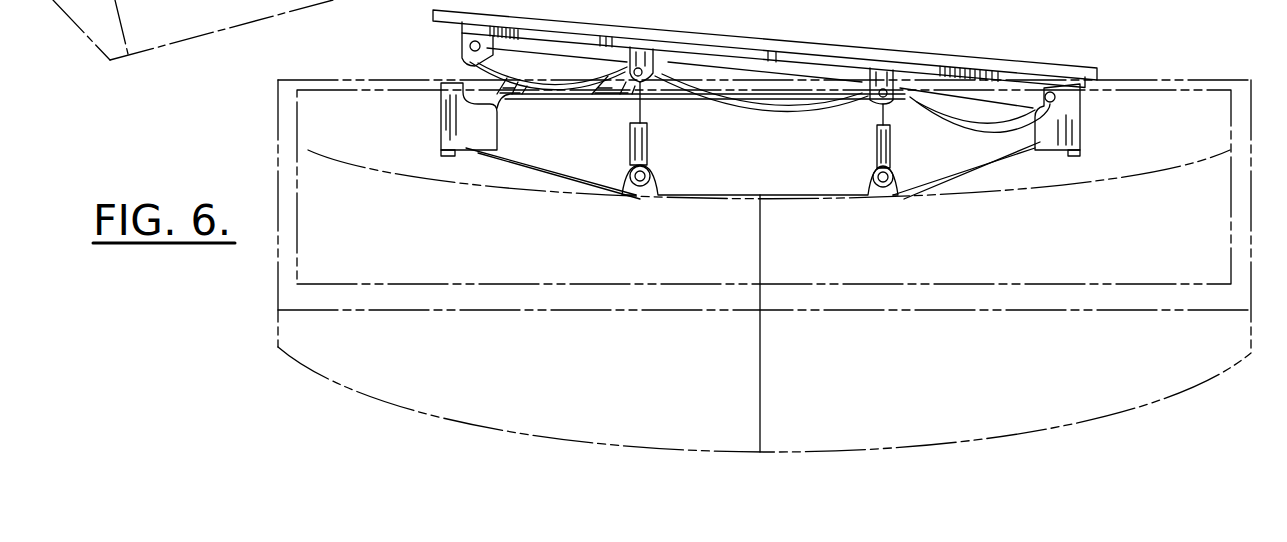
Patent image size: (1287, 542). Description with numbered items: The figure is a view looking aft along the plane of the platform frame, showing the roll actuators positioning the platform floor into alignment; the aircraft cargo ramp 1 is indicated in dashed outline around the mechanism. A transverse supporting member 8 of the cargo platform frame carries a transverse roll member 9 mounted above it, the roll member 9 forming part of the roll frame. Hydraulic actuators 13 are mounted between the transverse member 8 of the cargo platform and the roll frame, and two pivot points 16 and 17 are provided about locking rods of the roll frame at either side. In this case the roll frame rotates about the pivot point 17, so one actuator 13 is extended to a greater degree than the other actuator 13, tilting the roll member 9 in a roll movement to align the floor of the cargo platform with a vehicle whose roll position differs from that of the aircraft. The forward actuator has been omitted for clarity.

The cargo ramp 1 is at (279, 80).
The transverse supporting member 8 is at (786, 153).
The transverse roll member 9 is at (972, 83).
The hydraulic actuator 13 is at (648, 145).
The pivot point 16 is at (470, 47).
The pivot point 17 is at (1056, 97).